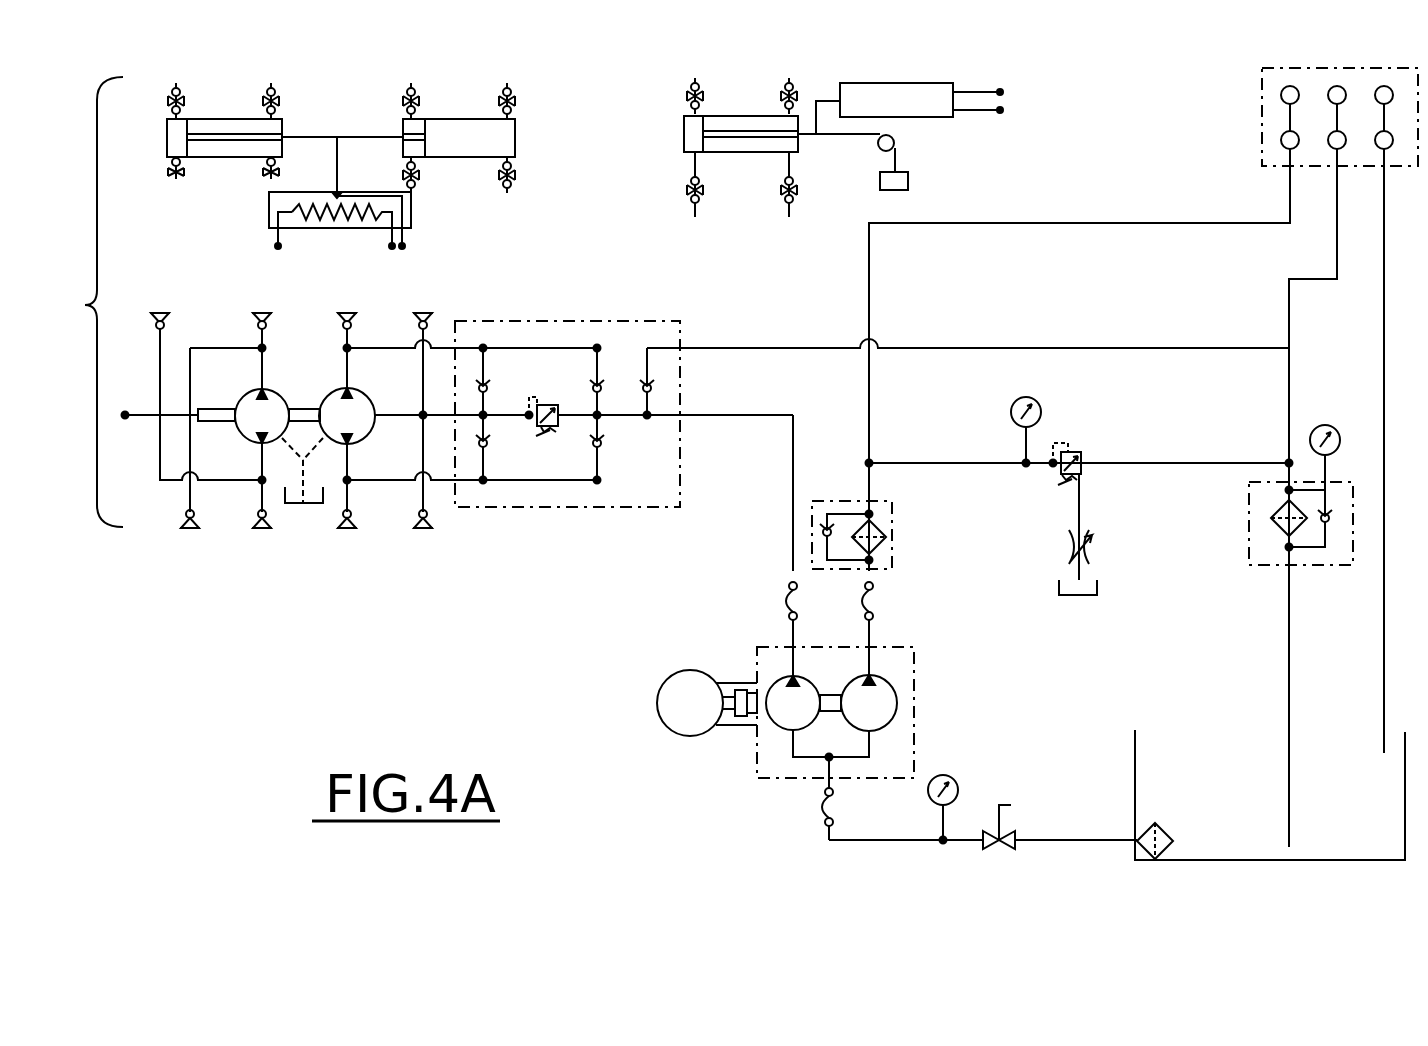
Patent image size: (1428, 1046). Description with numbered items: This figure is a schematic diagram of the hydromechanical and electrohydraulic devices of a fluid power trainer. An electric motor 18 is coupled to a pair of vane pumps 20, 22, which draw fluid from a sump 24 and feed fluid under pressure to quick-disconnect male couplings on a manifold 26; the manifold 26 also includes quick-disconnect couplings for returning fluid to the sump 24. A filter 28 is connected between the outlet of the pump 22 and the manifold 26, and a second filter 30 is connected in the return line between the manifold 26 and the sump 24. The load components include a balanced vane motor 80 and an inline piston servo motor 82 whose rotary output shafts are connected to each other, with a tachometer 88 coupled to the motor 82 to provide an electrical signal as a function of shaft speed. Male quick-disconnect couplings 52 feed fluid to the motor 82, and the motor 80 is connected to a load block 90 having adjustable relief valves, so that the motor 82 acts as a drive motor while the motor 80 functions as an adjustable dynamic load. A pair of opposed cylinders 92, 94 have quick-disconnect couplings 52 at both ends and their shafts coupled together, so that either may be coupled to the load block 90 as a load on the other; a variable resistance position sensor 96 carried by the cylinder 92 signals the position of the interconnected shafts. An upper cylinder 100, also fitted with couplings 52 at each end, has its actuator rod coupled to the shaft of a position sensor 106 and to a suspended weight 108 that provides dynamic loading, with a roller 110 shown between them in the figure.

The electric motor 18 is at (672, 678).
The vane pump 20 is at (790, 722).
The vane pump 22 is at (885, 688).
The sump 24 is at (1228, 842).
The manifold 26 is at (1262, 80).
The filter 28 is at (876, 560).
The second filter 30 is at (1275, 522).
The male quick-disconnect couplings 52 is at (400, 100).
The balanced vane motor 80 is at (362, 430).
The inline piston servo motor 82 is at (256, 432).
The tachometer 88 is at (208, 420).
The load block 90 is at (605, 322).
The cylinder 92 is at (210, 116).
The cylinder 94 is at (455, 116).
The variable resistance position sensor 96 is at (412, 218).
The upper cylinder 100 is at (728, 117).
The position sensor 106 is at (888, 84).
The weight 108 is at (910, 183).
The roller 110 is at (904, 158).